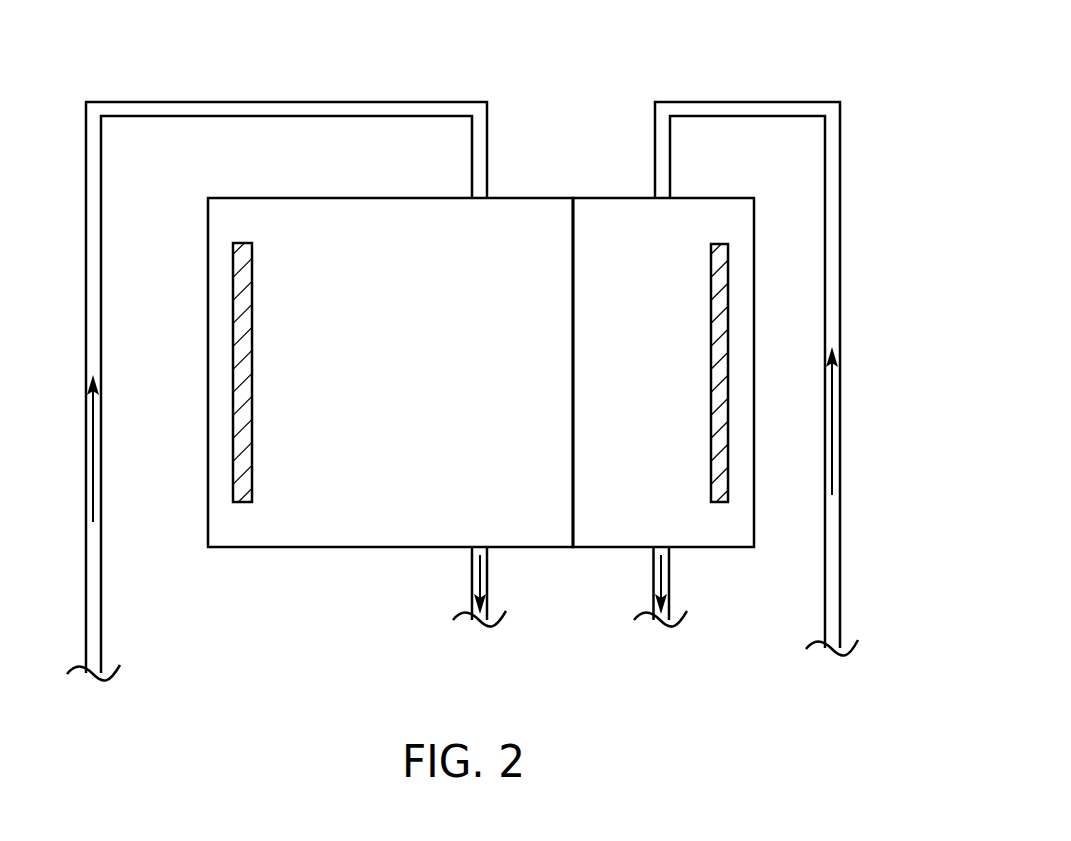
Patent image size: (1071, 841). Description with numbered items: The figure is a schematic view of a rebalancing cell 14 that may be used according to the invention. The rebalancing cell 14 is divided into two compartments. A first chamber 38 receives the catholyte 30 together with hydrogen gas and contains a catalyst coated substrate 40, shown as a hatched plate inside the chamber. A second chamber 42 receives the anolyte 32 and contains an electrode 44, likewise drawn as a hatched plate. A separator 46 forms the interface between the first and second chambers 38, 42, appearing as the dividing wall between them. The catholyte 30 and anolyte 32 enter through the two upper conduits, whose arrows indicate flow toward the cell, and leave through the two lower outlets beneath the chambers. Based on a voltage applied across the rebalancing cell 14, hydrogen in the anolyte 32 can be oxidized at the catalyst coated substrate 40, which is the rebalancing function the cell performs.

The rebalancing cell 14 is at (850, 58).
The catholyte 30 is at (85, 298).
The anolyte 32 is at (842, 198).
The first chamber 38 is at (376, 240).
The catalyst coated substrate 40 is at (234, 323).
The second chamber 42 is at (649, 242).
The electrode 44 is at (727, 277).
The separator 46 is at (575, 350).